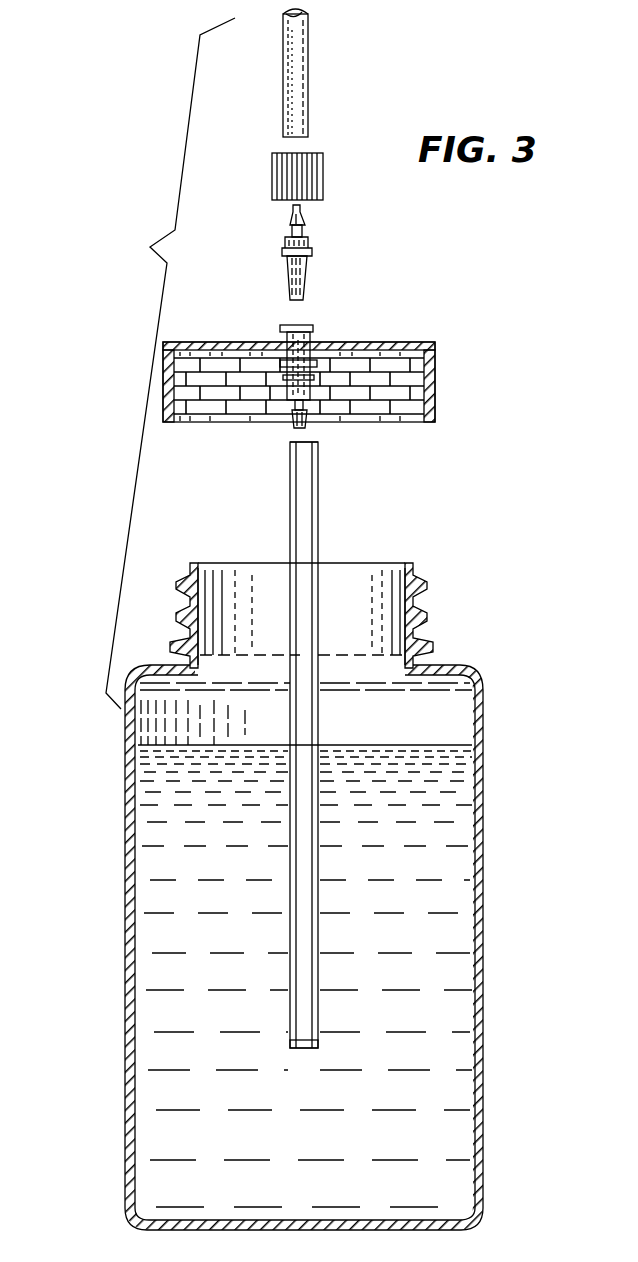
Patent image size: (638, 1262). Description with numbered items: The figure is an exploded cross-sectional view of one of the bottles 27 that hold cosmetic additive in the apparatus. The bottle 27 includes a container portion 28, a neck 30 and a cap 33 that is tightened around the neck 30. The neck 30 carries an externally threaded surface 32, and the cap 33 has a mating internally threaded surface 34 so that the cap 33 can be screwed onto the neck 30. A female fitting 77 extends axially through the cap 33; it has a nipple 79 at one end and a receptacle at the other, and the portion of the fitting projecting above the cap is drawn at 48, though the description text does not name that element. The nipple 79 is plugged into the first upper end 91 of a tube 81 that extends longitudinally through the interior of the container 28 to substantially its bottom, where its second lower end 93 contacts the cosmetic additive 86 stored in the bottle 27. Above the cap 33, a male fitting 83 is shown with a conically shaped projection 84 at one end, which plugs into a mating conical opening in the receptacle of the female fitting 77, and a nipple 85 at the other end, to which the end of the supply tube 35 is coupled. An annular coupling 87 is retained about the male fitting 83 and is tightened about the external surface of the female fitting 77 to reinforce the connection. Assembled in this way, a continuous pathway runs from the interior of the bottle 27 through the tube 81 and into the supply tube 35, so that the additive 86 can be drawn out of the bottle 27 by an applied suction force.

The bottle 27 is at (323, 836).
The container portion 28 is at (483, 959).
The neck 30 is at (420, 666).
The externally threaded surface 32 is at (416, 619).
The cap 33 is at (324, 392).
The internally threaded surface 34 is at (372, 405).
The supply tube 35 is at (300, 101).
The nozzle fitting 48 is at (312, 331).
The female fitting 77 is at (285, 378).
The nipple 79 is at (291, 426).
The tube 81 is at (299, 771).
The male fitting 83 is at (289, 252).
The conically shaped projection 84 is at (284, 268).
The nipple 85 is at (303, 221).
The cosmetic additive 86 is at (160, 773).
The annular coupling 87 is at (272, 178).
The first upper end 91 is at (312, 447).
The second lower end 93 is at (308, 1050).